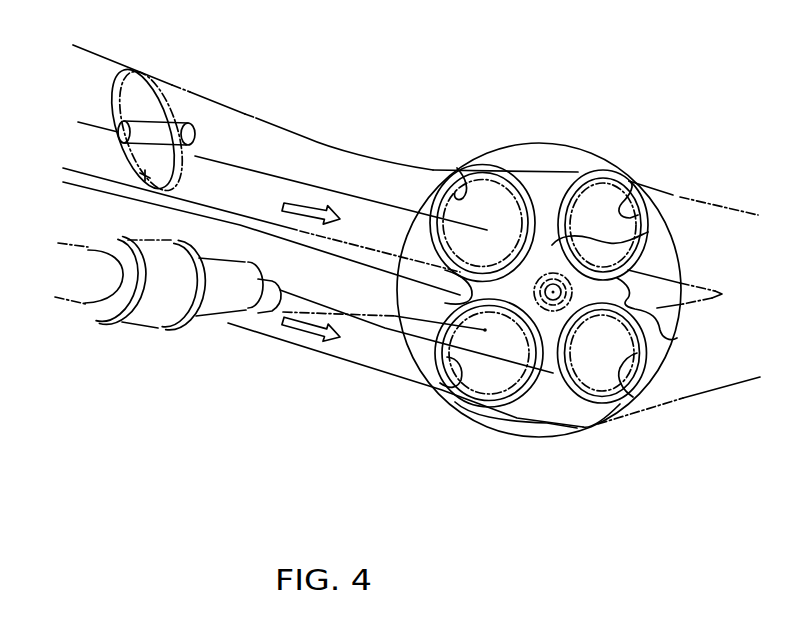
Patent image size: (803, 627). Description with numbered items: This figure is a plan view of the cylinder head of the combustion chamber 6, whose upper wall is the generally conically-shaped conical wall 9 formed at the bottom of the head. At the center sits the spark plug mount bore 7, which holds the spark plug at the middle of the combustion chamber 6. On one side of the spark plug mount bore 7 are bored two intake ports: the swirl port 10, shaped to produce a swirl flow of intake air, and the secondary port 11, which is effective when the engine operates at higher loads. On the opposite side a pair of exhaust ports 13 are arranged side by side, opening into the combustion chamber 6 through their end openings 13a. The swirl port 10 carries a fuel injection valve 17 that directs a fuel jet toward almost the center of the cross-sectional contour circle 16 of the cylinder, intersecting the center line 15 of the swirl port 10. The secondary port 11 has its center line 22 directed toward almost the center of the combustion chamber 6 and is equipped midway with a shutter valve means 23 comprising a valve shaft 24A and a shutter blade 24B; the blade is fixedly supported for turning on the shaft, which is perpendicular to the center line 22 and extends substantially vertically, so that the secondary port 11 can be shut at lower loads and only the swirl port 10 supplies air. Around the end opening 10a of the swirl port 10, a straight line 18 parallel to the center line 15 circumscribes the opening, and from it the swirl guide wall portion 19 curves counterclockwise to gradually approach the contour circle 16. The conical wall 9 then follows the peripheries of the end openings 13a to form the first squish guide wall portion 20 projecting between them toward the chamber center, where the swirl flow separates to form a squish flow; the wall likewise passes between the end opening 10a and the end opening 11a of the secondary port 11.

The combustion chamber 6 is at (648, 232).
The spark plug mount bore 7 is at (545, 290).
The conical wall 9 is at (558, 171).
The swirl port 10 is at (297, 349).
The end opening of the swirl port 10a is at (440, 392).
The secondary port 11 is at (347, 151).
The end opening of the secondary port 11a is at (457, 168).
The exhaust ports 13 is at (672, 192).
The end openings of the exhaust ports 13a is at (629, 181).
The center line of the swirl port 15 is at (383, 327).
The cross-sectional contour circle 16 is at (525, 143).
The fuel injection valve 17 is at (136, 335).
The straight line 18 is at (520, 430).
The swirl guide wall portion 19 is at (590, 426).
The first squish guide wall portion 20 is at (677, 338).
The center line of the secondary port 22 is at (275, 173).
The shutter valve means 23 is at (247, 81).
The valve shaft 24A is at (127, 135).
The shutter blade 24B is at (146, 176).